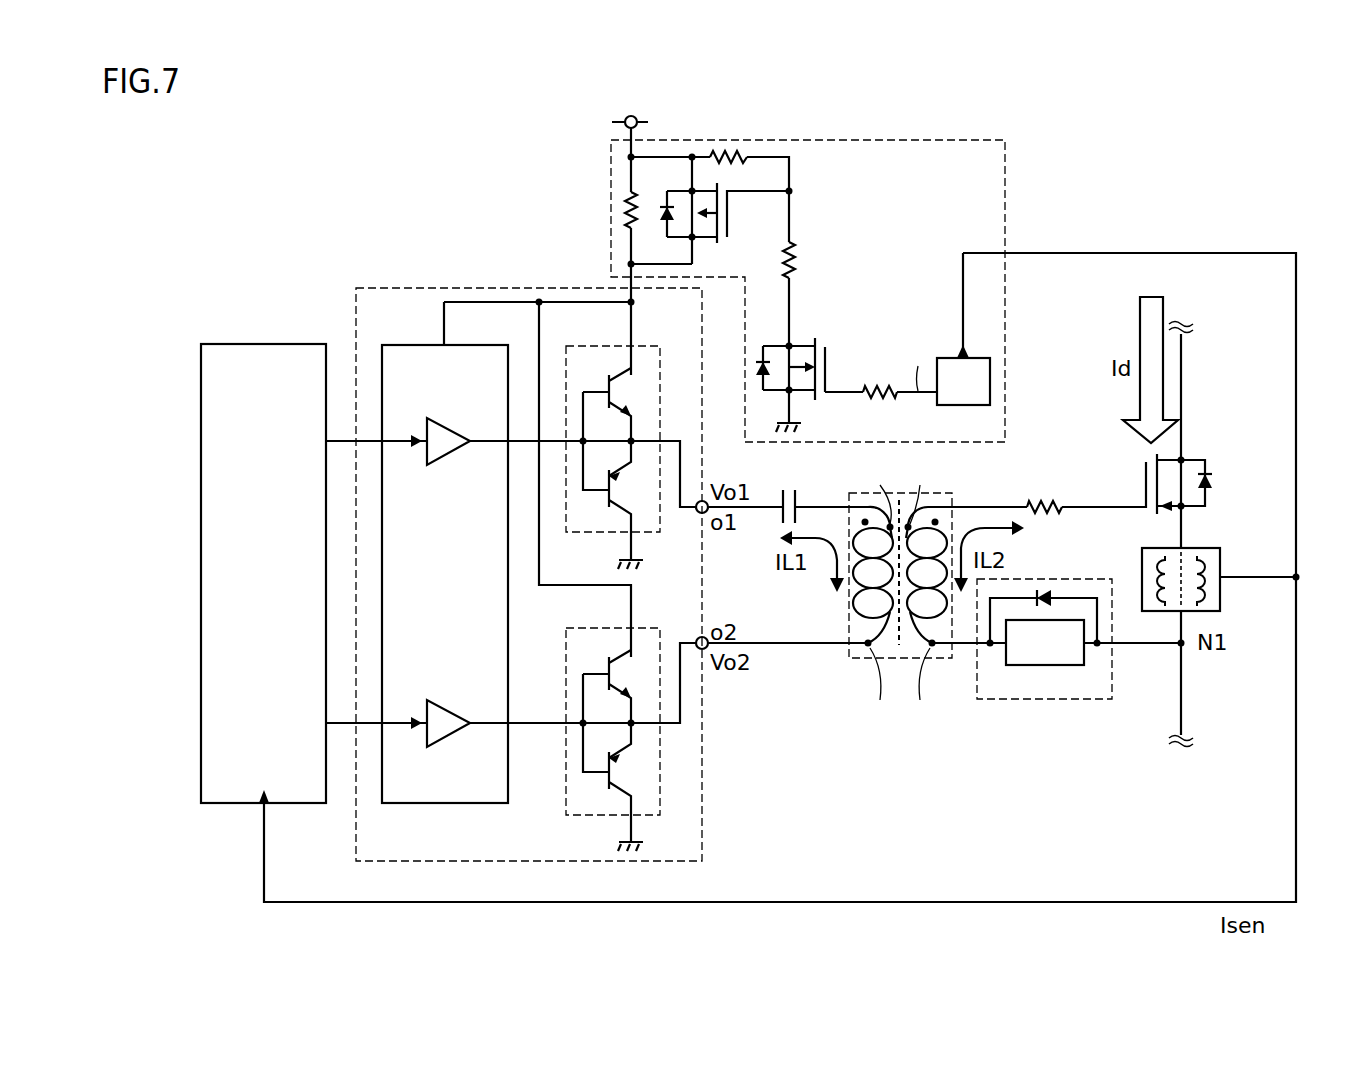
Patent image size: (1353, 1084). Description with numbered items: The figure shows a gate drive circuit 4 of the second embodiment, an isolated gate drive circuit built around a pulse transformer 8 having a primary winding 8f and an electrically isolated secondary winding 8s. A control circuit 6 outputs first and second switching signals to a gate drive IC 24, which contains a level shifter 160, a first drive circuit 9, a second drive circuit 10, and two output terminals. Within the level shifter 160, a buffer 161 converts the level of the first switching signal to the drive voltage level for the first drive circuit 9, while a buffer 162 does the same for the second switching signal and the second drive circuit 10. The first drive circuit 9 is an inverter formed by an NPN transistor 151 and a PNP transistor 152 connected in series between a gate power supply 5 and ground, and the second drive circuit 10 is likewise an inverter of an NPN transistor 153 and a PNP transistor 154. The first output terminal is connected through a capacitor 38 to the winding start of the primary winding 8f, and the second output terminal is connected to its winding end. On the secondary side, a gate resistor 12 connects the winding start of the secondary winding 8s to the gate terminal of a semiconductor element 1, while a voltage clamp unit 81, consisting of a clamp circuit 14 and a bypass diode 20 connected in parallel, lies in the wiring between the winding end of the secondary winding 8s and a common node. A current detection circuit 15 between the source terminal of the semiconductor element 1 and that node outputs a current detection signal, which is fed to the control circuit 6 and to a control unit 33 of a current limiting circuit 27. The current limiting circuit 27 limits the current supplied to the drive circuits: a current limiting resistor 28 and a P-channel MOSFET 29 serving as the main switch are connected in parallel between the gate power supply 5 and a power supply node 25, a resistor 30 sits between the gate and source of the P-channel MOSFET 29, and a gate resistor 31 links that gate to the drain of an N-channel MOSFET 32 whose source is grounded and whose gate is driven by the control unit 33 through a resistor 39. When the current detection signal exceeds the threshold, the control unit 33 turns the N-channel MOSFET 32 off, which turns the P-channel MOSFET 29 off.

The semiconductor element 1 is at (1186, 460).
The gate drive circuit 4 is at (1248, 121).
The gate power supply 5 is at (640, 118).
The control circuit 6 is at (263, 344).
The pulse transformer 8 is at (907, 584).
The primary winding 8f is at (855, 648).
The secondary winding 8s is at (946, 648).
The first drive circuit 9 is at (648, 348).
The second drive circuit 10 is at (648, 630).
The gate resistor 12 is at (1044, 502).
The clamp circuit 14 is at (1043, 666).
The current detection circuit 15 is at (1220, 565).
The bypass diode 20 is at (1043, 590).
The gate drive IC 24 is at (702, 830).
The power supply node 25 is at (631, 300).
The current limiting circuit 27 is at (1005, 172).
The current limiting resistor 28 is at (626, 212).
The P-channel MOSFET 29 is at (728, 222).
The resistor 30 is at (730, 152).
The gate resistor 31 is at (793, 262).
The N-channel MOSFET 32 is at (795, 345).
The control unit 33 is at (992, 382).
The capacitor 38 is at (796, 490).
The resistor 39 is at (891, 397).
The voltage clamp unit 81 is at (1052, 619).
The NPN transistor 151 is at (607, 380).
The PNP transistor 152 is at (607, 505).
The NPN transistor 153 is at (607, 662).
The PNP transistor 154 is at (607, 788).
The level shifter 160 is at (475, 345).
The buffer 161 is at (445, 425).
The buffer 162 is at (445, 707).